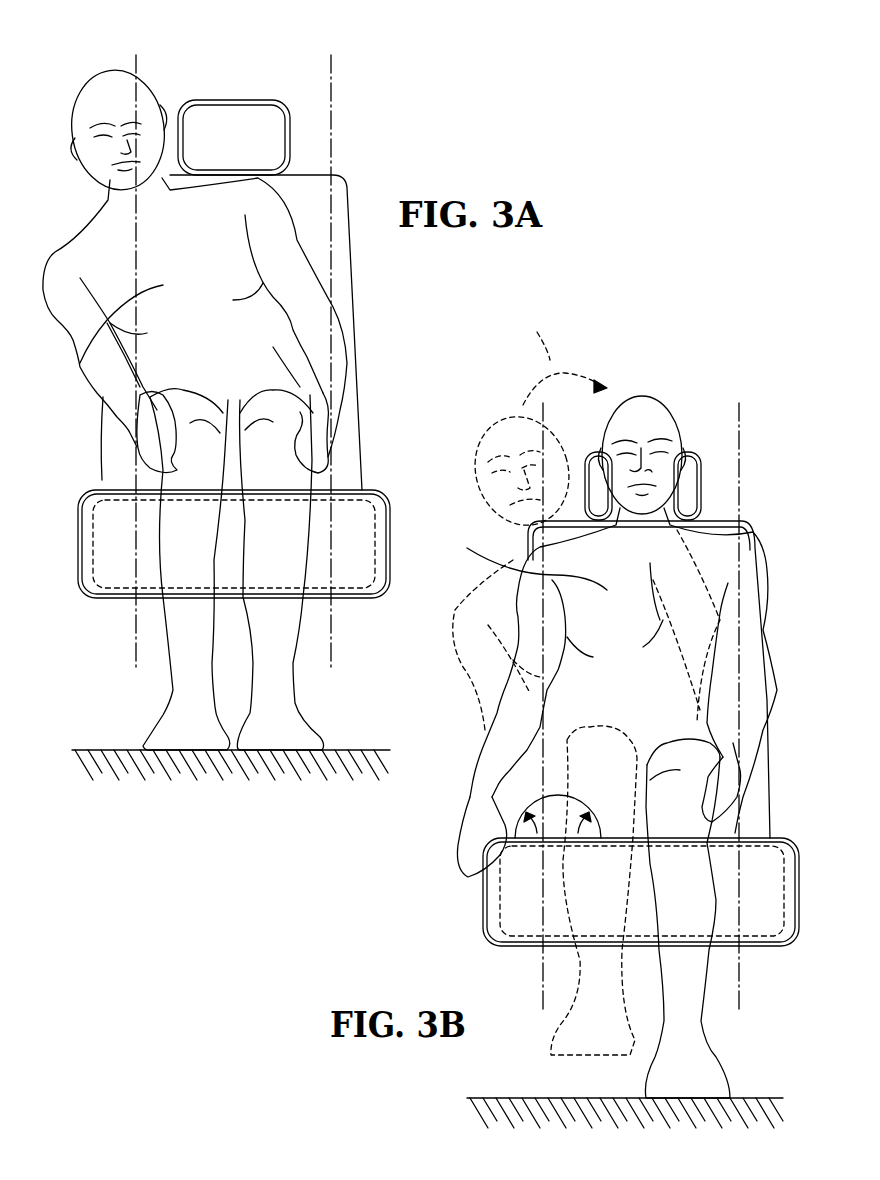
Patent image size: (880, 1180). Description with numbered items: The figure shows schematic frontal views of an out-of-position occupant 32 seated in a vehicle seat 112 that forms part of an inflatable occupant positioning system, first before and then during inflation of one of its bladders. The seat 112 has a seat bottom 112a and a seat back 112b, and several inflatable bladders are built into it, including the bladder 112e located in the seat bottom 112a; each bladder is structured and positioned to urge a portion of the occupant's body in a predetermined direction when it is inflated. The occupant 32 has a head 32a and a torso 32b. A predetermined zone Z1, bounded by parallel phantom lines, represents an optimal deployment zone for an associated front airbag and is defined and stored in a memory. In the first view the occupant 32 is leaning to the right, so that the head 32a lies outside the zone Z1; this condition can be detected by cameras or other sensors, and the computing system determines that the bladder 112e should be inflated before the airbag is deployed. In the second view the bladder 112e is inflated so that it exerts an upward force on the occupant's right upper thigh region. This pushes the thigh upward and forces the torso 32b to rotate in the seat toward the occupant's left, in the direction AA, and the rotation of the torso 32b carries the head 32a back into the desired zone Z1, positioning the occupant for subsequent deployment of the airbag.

In FIG. 3A, the occupant 32 is at (187, 385).
In FIG. 3B, the occupant 32 is at (615, 722).
In FIG. 3A, the head 32a is at (83, 100).
In FIG. 3B, the head 32a is at (653, 413).
In FIG. 3A, the torso 32b is at (80, 365).
In FIG. 3B, the torso 32b is at (468, 548).
In FIG. 3A, the seat 112 is at (239, 349).
In FIG. 3B, the seat 112 is at (613, 706).
In FIG. 3A, the seat bottom 112a is at (77, 515).
In FIG. 3B, the seat bottom 112a is at (483, 905).
In FIG. 3A, the seat back 112b is at (347, 207).
In FIG. 3B, the seat back 112b is at (742, 520).
In FIG. 3B, the bladder 112e is at (515, 833).
In FIG. 3A, the zone Z1 is at (334, 118).
In FIG. 3B, the direction AA is at (565, 358).